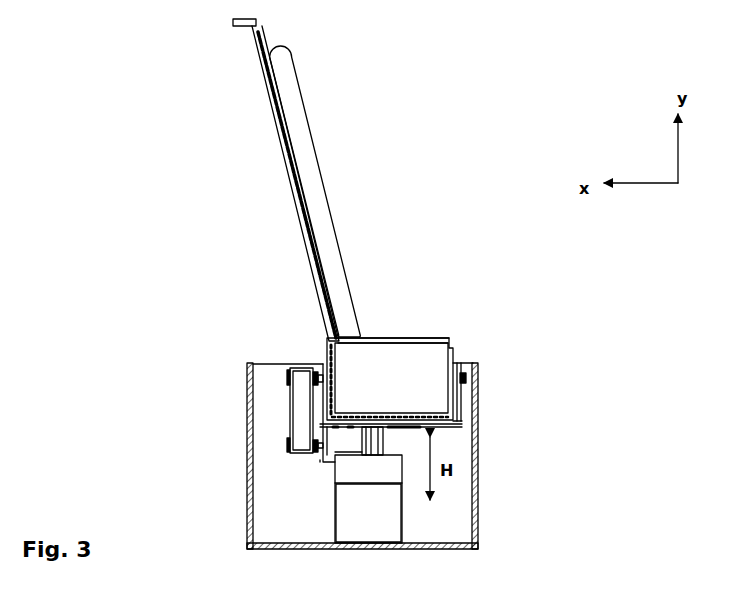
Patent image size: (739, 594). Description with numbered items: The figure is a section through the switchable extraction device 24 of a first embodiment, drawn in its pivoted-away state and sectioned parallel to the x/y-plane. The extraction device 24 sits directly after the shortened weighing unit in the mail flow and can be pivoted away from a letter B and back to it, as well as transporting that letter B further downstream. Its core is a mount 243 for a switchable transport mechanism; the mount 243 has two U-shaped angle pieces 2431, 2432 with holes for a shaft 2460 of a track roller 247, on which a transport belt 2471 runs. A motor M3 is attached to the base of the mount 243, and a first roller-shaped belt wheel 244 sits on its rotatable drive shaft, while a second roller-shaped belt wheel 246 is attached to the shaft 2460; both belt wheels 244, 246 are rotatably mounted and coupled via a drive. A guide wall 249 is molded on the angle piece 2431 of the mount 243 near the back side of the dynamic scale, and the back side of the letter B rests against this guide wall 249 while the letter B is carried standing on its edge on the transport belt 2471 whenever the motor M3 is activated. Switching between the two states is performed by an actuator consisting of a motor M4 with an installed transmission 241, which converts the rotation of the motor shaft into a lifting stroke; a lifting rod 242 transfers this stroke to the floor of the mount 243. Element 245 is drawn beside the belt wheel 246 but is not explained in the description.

The extraction device 24 is at (212, 55).
The guide wall 249 is at (277, 133).
The letter B is at (333, 220).
The mount 243 is at (397, 413).
The angle piece 2431 is at (323, 350).
The transport belt 2471 is at (425, 340).
The track roller 247 is at (455, 350).
The shaft 2460 is at (467, 378).
The angle piece 2432 is at (463, 410).
The lifting rod 242 is at (383, 436).
The transmission 241 is at (372, 472).
The motor M4 is at (350, 504).
The motor M3 is at (323, 467).
The second roller-shaped belt wheel 246 is at (290, 375).
The slider 245 is at (300, 395).
The first roller-shaped belt wheel 244 is at (290, 445).